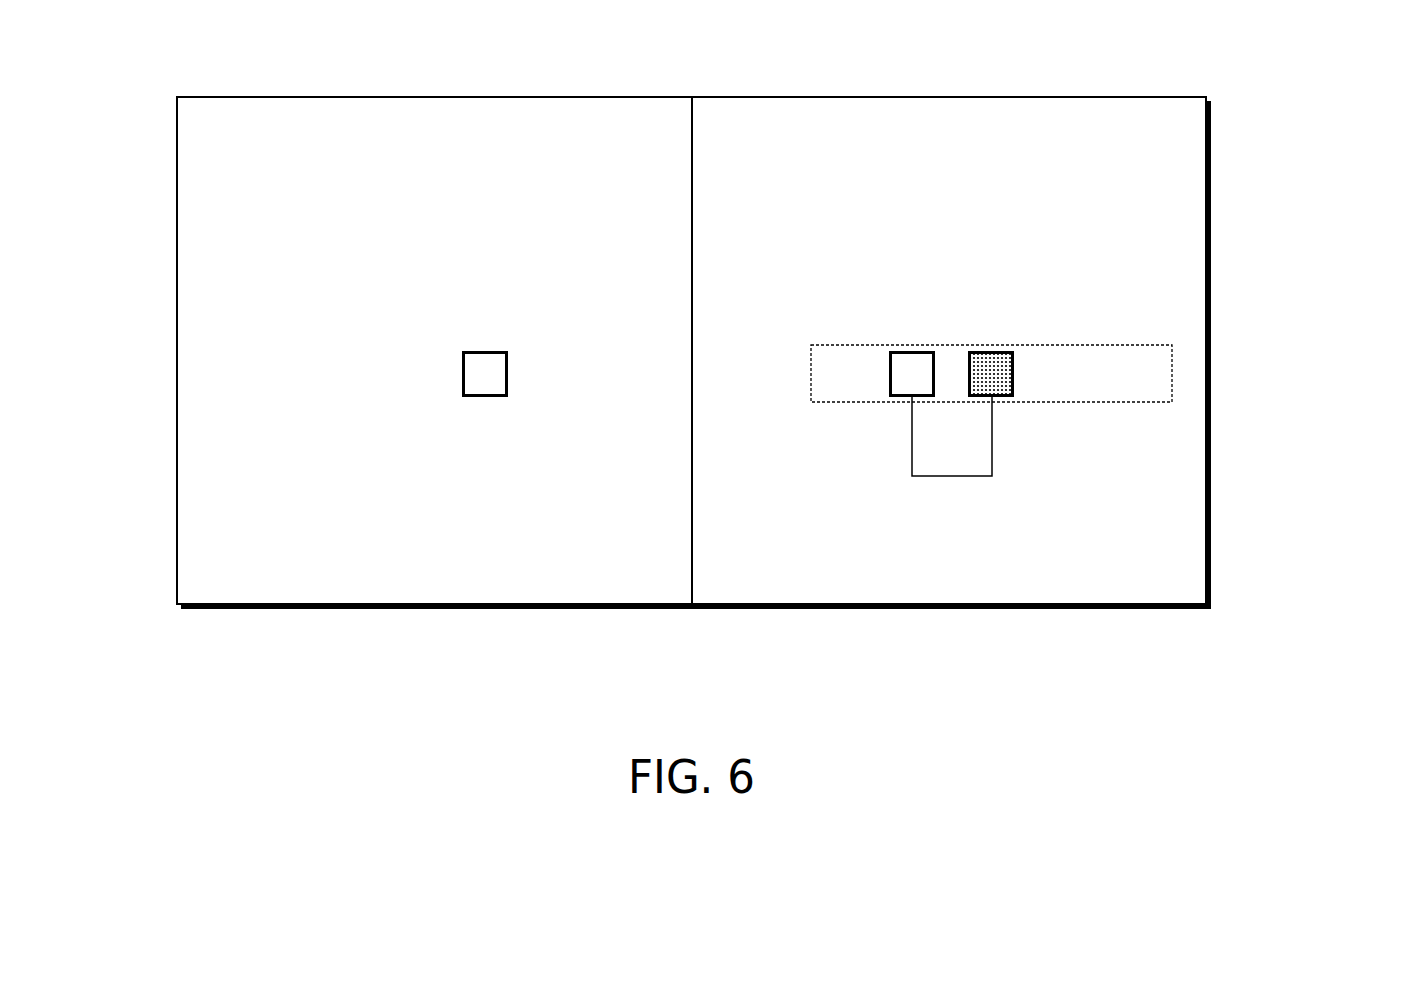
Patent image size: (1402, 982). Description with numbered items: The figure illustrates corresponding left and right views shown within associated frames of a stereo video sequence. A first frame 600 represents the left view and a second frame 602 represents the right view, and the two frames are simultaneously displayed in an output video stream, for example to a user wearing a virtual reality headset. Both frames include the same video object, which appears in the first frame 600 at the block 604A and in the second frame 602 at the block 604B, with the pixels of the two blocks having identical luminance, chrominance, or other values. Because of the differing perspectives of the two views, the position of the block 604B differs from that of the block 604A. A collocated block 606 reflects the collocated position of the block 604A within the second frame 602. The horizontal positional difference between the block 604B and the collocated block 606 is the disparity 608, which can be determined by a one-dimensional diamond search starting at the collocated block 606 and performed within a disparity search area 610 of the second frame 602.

The first frame 600 is at (543, 83).
The second frame 602 is at (1043, 83).
The block 604A is at (462, 363).
The block 604B is at (912, 350).
The collocated block 606 is at (1014, 390).
The disparity 608 is at (955, 477).
The disparity search area 610 is at (1050, 345).